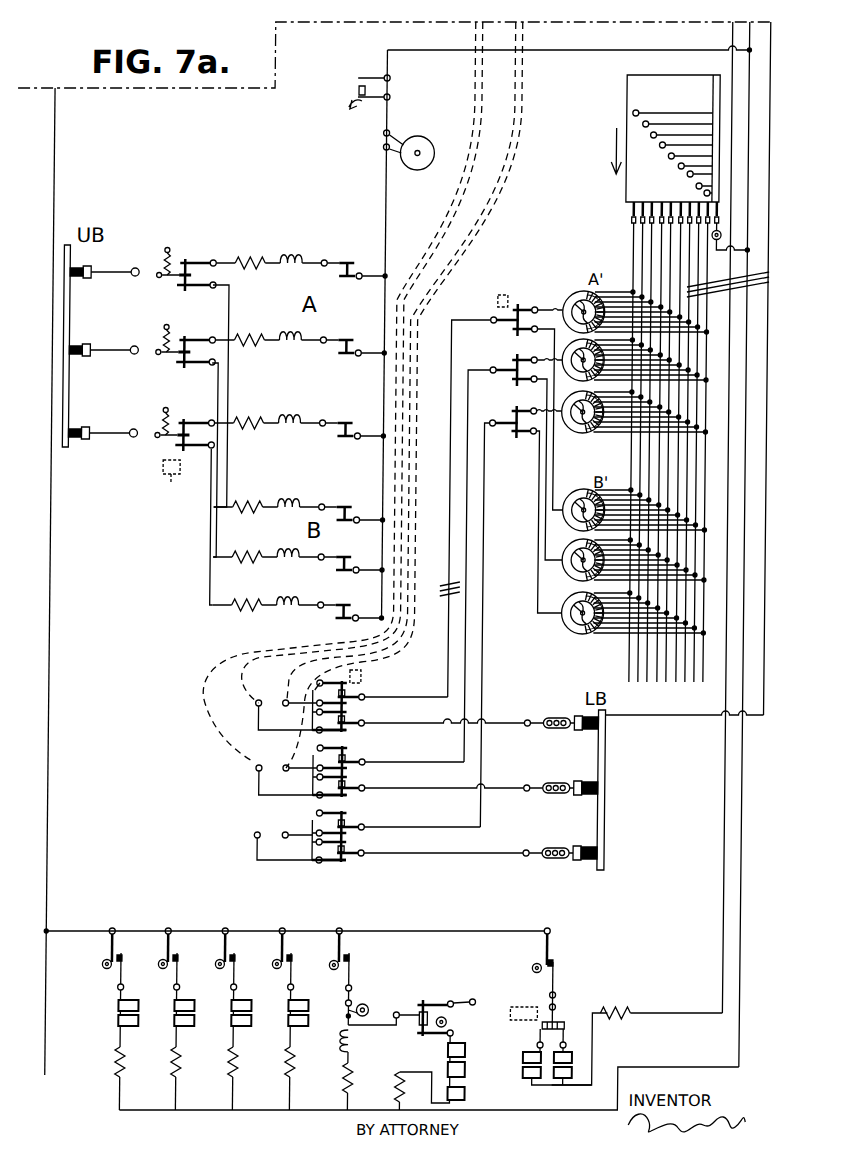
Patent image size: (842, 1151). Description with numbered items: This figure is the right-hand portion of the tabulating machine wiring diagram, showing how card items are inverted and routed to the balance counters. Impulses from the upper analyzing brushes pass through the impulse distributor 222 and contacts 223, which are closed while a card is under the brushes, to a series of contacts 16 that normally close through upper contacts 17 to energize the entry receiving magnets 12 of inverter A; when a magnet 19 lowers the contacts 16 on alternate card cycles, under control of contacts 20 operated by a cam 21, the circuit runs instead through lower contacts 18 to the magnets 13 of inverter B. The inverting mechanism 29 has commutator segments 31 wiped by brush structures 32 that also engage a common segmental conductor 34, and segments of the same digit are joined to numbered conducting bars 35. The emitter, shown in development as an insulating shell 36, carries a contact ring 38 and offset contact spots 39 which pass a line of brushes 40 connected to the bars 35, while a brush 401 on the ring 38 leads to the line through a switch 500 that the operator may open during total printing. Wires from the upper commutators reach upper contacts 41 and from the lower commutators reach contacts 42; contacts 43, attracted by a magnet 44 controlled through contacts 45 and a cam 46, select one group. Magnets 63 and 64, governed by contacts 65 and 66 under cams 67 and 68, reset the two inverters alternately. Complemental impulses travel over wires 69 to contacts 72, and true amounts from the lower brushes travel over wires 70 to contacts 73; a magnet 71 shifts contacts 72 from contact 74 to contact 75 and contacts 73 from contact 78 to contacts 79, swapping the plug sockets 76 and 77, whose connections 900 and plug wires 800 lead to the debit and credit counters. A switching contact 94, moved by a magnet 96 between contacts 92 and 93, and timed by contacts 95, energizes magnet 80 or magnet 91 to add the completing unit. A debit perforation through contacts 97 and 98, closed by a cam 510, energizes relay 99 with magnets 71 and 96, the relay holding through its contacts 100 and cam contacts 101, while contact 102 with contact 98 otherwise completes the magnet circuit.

The entry receiving magnet 12 is at (303, 262).
The entry receiving magnet 13 is at (300, 503).
The contacts 16 is at (170, 275).
The upper contacts 17 is at (185, 263).
The lower contacts 18 is at (188, 285).
The magnet 19 is at (112, 1028).
The contacts 20 is at (127, 958).
The cam 21 is at (110, 968).
The inverting mechanism 29 is at (577, 440).
The segments 31 is at (602, 297).
The brush structure 32 is at (573, 296).
The common segmental conductor 34 is at (567, 298).
The conducting bar 35 is at (739, 281).
The insulating shell 36 is at (645, 96).
The contact ring 38 is at (722, 97).
The contact spots 39 is at (681, 168).
The brushes 40 is at (634, 215).
The upper contacts 41 is at (520, 410).
The contacts 42 is at (528, 386).
The contacts 43 is at (499, 328).
The magnet 44 is at (500, 298).
The contacts 45 is at (188, 956).
The cam 46 is at (174, 969).
The magnet 63 is at (252, 1024).
The magnet 64 is at (308, 1025).
The contacts 65 is at (247, 958).
The contacts 66 is at (305, 958).
The cam 67 is at (236, 976).
The cam 68 is at (292, 974).
The wires 69 is at (451, 573).
The wires 70 is at (495, 808).
The magnet 71 is at (371, 677).
The contacts 72 is at (369, 697).
The contacts 73 is at (370, 723).
The contact 74 is at (310, 685).
The contact 75 is at (347, 683).
The plug socket 76 is at (293, 700).
The plug sockets 77 is at (263, 701).
The contact 78 is at (348, 731).
The contacts 79 is at (416, 700).
The magnet 80 is at (593, 1063).
The magnet 91 is at (540, 1079).
The contact 92 is at (574, 1030).
The contact 93 is at (523, 1022).
The switching contact 94 is at (568, 1023).
The contacts 95 is at (565, 962).
The magnet 96 is at (468, 1080).
The contact 97 is at (448, 1004).
The contact 98 is at (418, 1010).
The relay 99 is at (362, 1040).
The relay contacts 100 is at (376, 1004).
The cam contacts 101 is at (362, 957).
The contact 102 is at (437, 1040).
The impulse distributor 222 is at (423, 171).
The contacts 223 is at (368, 103).
The brush 401 is at (721, 210).
The switch 500 is at (724, 237).
The cam 510 is at (458, 1022).
The plug wires 800 is at (476, 68).
The connections 900 is at (523, 68).